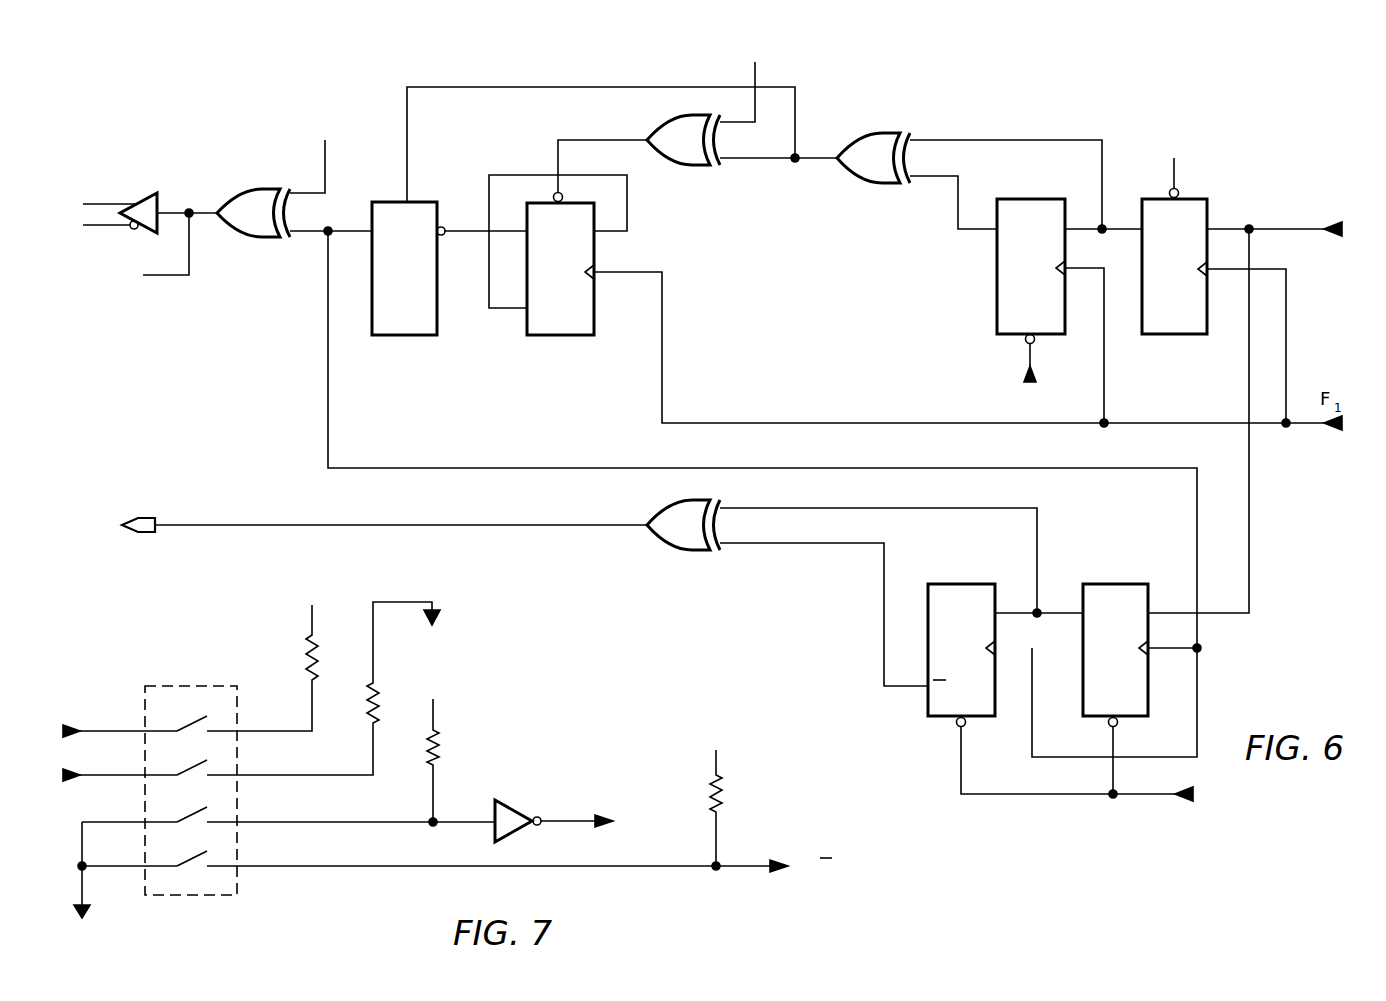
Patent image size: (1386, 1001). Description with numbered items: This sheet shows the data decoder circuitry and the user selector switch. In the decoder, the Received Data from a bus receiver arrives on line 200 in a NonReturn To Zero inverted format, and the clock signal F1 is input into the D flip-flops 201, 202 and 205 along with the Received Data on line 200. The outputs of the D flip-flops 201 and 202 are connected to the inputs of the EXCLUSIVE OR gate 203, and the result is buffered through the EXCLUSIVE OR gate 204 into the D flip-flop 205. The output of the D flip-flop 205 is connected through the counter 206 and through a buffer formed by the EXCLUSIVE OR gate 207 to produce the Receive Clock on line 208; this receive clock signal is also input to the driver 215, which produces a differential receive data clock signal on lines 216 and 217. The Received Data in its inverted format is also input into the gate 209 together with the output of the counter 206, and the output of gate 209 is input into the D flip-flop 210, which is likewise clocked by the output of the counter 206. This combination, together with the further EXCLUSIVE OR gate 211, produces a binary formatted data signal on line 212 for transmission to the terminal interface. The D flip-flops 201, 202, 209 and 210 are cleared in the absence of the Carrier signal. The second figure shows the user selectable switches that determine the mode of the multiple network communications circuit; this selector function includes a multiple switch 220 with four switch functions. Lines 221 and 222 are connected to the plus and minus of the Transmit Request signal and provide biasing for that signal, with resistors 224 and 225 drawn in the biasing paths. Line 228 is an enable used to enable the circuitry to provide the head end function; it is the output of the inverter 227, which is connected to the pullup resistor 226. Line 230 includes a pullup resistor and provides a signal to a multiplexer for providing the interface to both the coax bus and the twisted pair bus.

In FIG. 6, the line 200 is at (1259, 228).
In FIG. 6, the D flip-flop 201 is at (1209, 374).
In FIG. 6, the D flip-flop 202 is at (1066, 311).
In FIG. 6, the EXCLUSIVE OR gate 203 is at (969, 181).
In FIG. 6, the EXCLUSIVE OR gate 204 is at (742, 101).
In FIG. 6, the D flip-flop 205 is at (915, 285).
In FIG. 6, the counter 206 is at (583, 211).
In FIG. 6, the EXCLUSIVE OR gate 207 is at (294, 188).
In FIG. 6, the line 208 is at (143, 277).
In FIG. 6, the NOR gate 209 is at (1142, 689).
In FIG. 6, the D flip-flop 210 is at (1099, 695).
In FIG. 6, the EXCLUSIVE OR gate 211 is at (842, 593).
In FIG. 6, the line 212 is at (223, 526).
In FIG. 6, the driver 215 is at (159, 198).
In FIG. 6, the line 216 is at (118, 200).
In FIG. 6, the line 217 is at (116, 228).
In FIG. 7, the multiple switch 220 is at (222, 684).
In FIG. 7, the line 221 is at (119, 726).
In FIG. 7, the line 222 is at (122, 770).
In FIG. 7, the resistor 224 is at (301, 669).
In FIG. 7, the resistor 225 is at (366, 718).
In FIG. 7, the pullup resistor 226 is at (440, 752).
In FIG. 7, the inverter 227 is at (520, 810).
In FIG. 7, the line 228 is at (602, 818).
In FIG. 7, the line 230 is at (736, 872).